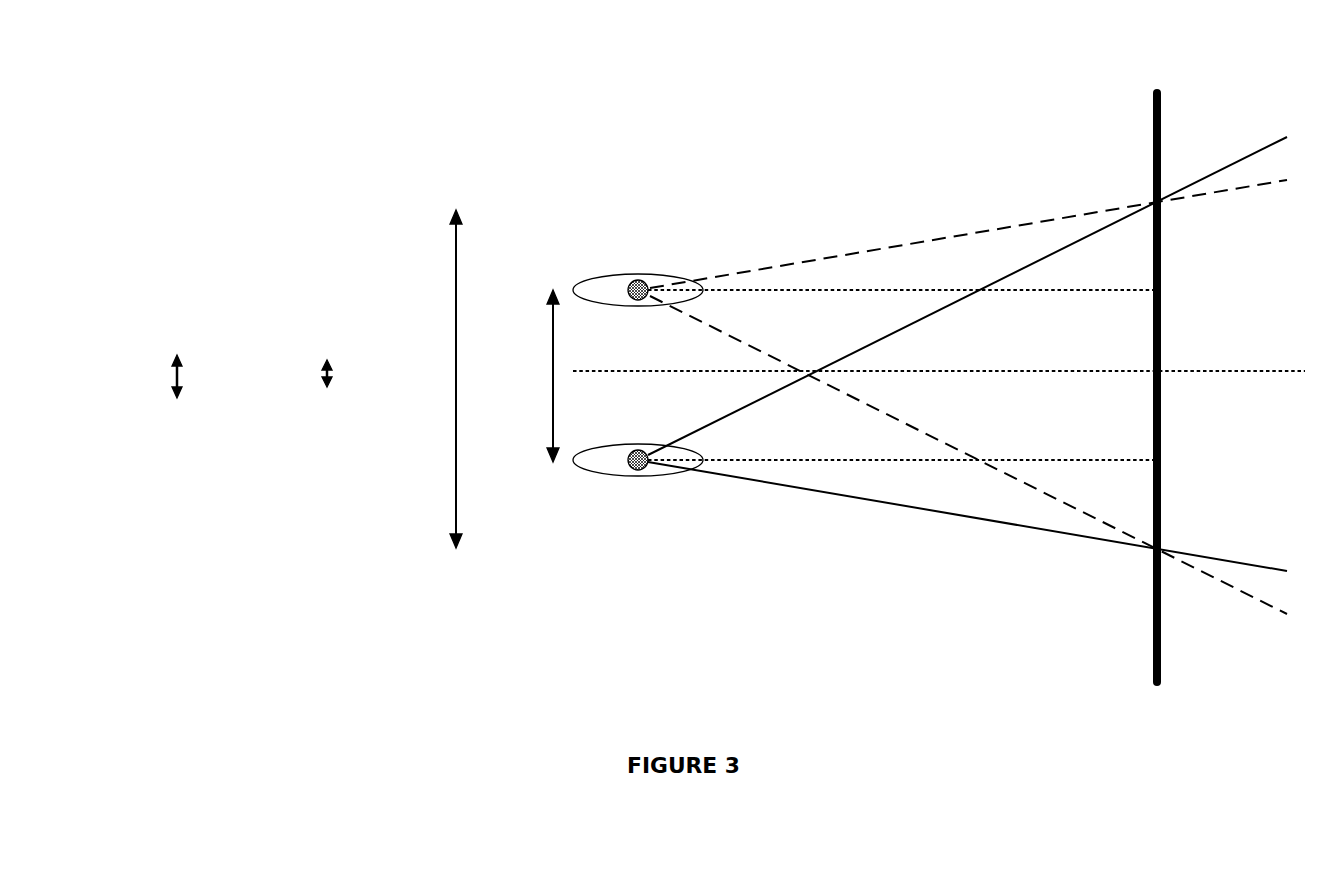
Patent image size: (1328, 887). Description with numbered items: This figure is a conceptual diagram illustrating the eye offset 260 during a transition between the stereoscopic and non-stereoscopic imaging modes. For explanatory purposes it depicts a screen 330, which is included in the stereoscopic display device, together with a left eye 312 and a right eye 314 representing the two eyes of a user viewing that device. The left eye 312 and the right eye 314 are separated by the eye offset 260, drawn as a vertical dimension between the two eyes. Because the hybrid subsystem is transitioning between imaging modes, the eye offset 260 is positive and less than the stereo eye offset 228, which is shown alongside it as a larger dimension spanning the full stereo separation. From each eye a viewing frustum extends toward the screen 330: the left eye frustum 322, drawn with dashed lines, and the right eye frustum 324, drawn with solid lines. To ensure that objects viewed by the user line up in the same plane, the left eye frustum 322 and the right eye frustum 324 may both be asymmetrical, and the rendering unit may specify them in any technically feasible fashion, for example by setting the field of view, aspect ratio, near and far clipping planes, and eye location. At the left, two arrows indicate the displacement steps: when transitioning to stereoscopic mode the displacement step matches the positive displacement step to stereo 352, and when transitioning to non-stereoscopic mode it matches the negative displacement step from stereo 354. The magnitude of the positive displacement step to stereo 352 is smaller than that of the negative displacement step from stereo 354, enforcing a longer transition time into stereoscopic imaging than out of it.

The stereo eye offset 228 is at (424, 379).
The eye offset 260 is at (524, 376).
The left eye 312 is at (650, 277).
The right eye 314 is at (660, 475).
The left eye frustum 322 is at (985, 230).
The right eye frustum 324 is at (962, 515).
The screen 330 is at (1153, 135).
The positive displacement step to stereo 352 is at (133, 380).
The negative displacement step from stereo 354 is at (280, 380).